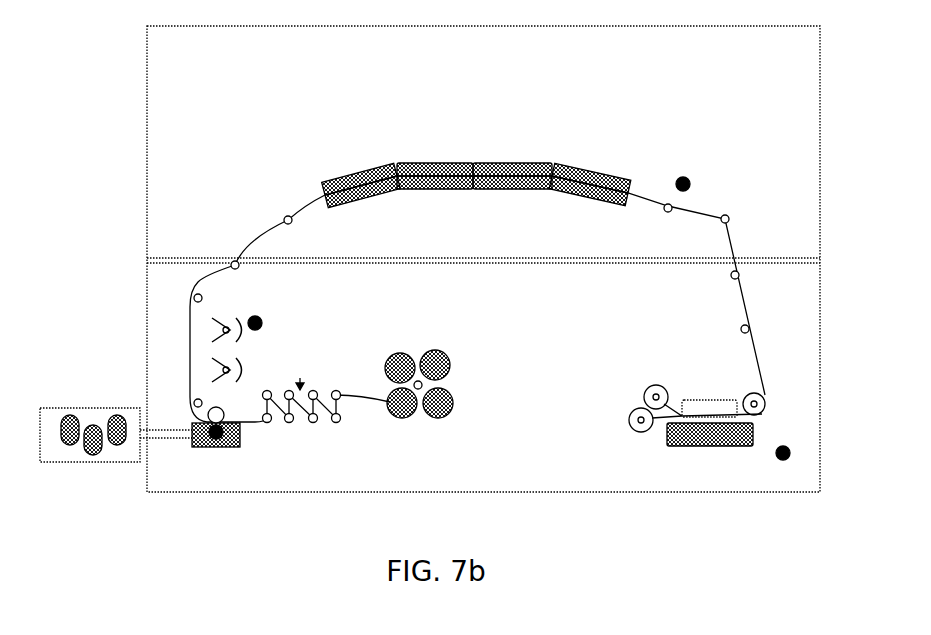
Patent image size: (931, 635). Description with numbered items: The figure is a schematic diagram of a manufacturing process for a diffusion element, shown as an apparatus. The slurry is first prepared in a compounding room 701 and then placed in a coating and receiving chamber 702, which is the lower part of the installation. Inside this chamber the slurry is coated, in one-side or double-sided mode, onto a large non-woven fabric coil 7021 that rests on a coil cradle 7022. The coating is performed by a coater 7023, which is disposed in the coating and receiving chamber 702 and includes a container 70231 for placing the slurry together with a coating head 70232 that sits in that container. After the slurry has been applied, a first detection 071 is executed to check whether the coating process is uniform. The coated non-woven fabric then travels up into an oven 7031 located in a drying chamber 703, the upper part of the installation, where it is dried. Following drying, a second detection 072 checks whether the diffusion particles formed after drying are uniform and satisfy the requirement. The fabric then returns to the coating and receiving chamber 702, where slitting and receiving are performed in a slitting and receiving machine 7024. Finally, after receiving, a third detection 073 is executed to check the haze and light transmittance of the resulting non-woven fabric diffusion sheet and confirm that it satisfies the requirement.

The compounding room 701 is at (86, 455).
The coating and receiving chamber 702 is at (583, 298).
The drying chamber 703 is at (250, 78).
The large non-woven fabric coil 7021 is at (418, 353).
The coil cradle 7022 is at (420, 418).
The coater 7023 is at (235, 404).
The slitting and receiving machine 7024 is at (697, 433).
The oven 7031 is at (476, 190).
The first detection 071 is at (242, 336).
The second detection 072 is at (688, 172).
The third detection 073 is at (788, 465).
The container for placing the slurry 70231 is at (201, 440).
The coating head 70232 is at (240, 433).